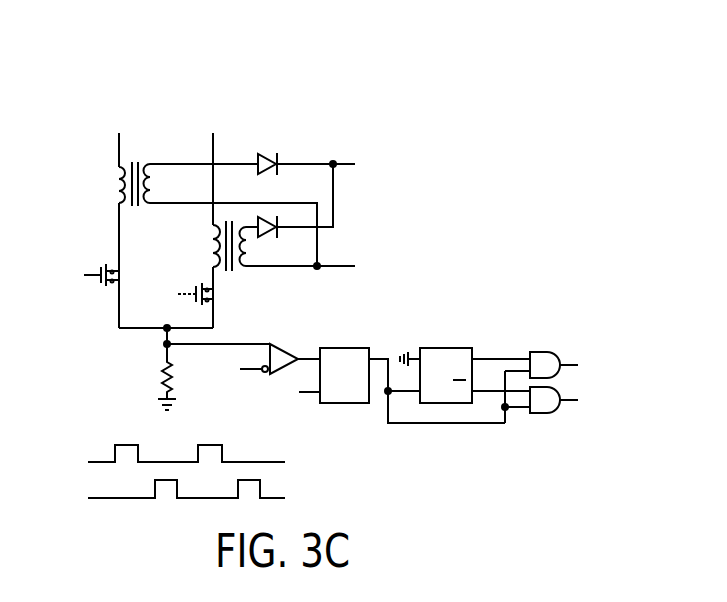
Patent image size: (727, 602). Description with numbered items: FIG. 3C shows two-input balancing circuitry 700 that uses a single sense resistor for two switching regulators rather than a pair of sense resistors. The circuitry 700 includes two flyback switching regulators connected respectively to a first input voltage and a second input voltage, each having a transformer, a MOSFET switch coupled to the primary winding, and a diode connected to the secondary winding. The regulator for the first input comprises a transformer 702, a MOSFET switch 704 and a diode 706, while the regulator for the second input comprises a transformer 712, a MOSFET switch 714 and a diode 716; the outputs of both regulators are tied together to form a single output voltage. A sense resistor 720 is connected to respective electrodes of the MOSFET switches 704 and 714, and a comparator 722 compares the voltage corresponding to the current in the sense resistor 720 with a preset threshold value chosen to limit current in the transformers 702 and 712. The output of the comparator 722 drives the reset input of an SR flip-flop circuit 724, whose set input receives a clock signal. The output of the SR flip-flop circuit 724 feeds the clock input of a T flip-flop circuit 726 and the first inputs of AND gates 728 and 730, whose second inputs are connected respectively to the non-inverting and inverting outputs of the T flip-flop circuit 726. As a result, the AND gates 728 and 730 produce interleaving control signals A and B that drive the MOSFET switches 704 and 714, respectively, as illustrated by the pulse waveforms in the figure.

The two-input balancing circuitry 700 is at (196, 70).
The transformer 702 is at (113, 183).
The MOSFET switch 704 is at (106, 287).
The diode 706 is at (267, 152).
The transformer 712 is at (229, 270).
The MOSFET switch 714 is at (200, 284).
The diode 716 is at (272, 240).
The sense resistor 720 is at (160, 365).
The comparator 722 is at (290, 349).
The SR flip-flop circuit 724 is at (348, 404).
The T flip-flop circuit 726 is at (447, 348).
The AND gate 728 is at (538, 351).
The AND gate 730 is at (544, 413).